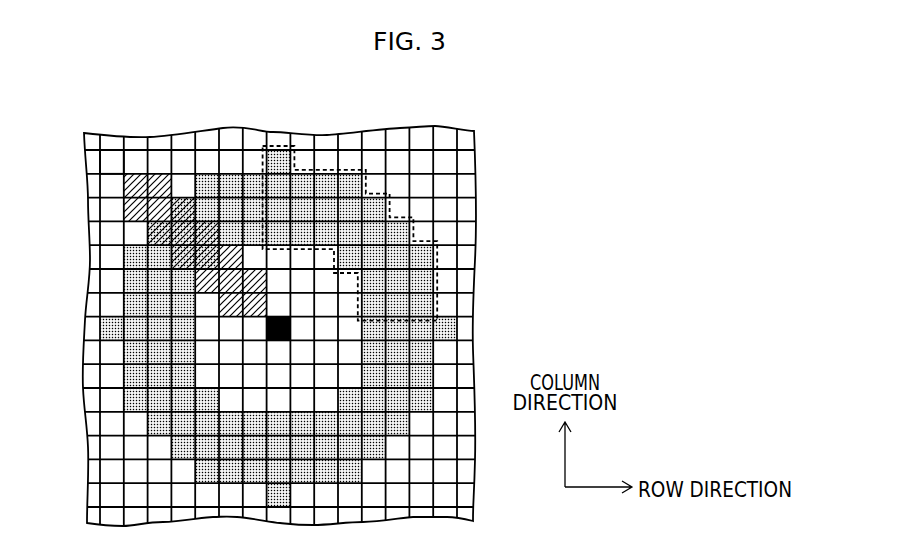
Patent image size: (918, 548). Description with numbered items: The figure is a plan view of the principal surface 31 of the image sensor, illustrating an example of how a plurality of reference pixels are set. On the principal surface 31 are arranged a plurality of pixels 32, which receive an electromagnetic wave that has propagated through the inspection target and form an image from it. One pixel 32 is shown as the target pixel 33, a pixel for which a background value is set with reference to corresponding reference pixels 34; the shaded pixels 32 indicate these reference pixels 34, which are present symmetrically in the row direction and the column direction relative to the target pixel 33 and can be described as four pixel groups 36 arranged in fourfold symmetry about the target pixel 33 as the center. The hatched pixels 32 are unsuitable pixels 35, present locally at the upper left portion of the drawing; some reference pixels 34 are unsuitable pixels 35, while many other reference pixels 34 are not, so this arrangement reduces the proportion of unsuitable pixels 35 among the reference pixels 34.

The principal surface 31 is at (287, 305).
The pixels 32 is at (93, 163).
The target pixel 33 is at (283, 315).
The reference pixels 34 is at (428, 256).
The unsuitable pixels 35 is at (135, 174).
The pixel groups 36 is at (284, 146).